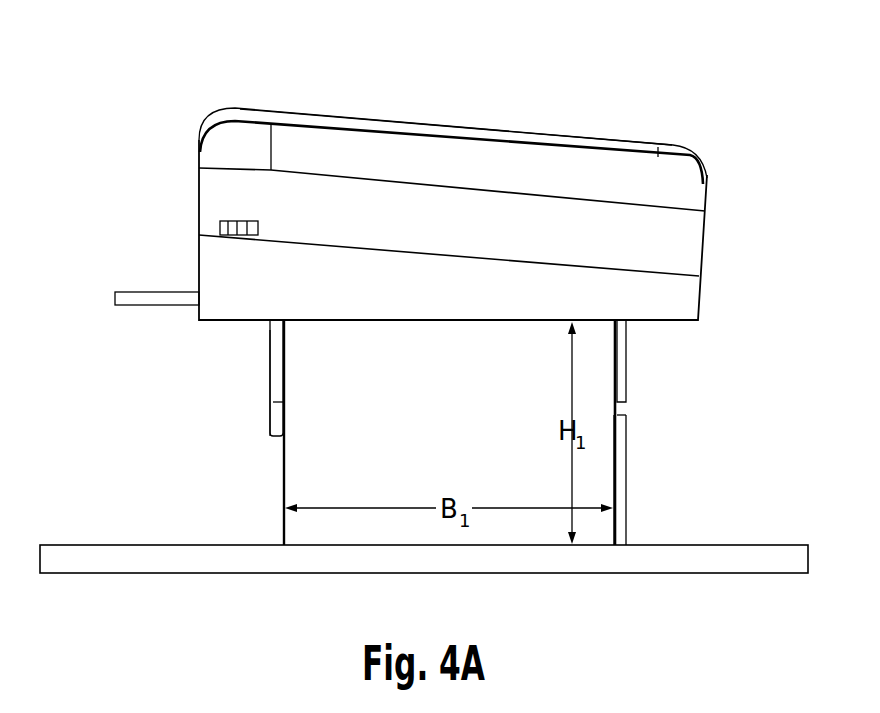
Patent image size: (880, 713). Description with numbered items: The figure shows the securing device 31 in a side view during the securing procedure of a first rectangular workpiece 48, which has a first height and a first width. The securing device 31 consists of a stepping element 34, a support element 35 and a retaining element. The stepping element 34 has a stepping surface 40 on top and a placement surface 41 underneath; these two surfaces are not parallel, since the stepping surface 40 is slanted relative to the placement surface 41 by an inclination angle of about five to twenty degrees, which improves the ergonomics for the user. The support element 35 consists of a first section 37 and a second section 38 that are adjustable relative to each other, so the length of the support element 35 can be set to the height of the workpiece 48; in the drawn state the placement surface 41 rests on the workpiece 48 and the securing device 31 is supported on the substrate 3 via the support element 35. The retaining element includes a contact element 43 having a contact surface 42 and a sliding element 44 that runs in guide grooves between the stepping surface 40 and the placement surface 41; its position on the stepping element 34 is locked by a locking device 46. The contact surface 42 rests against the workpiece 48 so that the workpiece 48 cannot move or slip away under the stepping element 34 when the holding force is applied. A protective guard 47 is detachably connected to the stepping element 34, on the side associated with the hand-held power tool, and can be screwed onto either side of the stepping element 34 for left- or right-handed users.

The substrate 3 is at (87, 540).
The securing device 31 is at (120, 142).
The stepping element 34 is at (660, 297).
The support element 35 is at (650, 421).
The first section 37 is at (622, 370).
The second section 38 is at (622, 485).
The stepping surface 40 is at (411, 250).
The placement surface 41 is at (457, 324).
The contact surface 42 is at (286, 370).
The contact element 43 is at (270, 388).
The sliding element 44 is at (150, 297).
The locking device 46 is at (237, 222).
The protective guard 47 is at (578, 168).
The first rectangular workpiece 48 is at (391, 457).